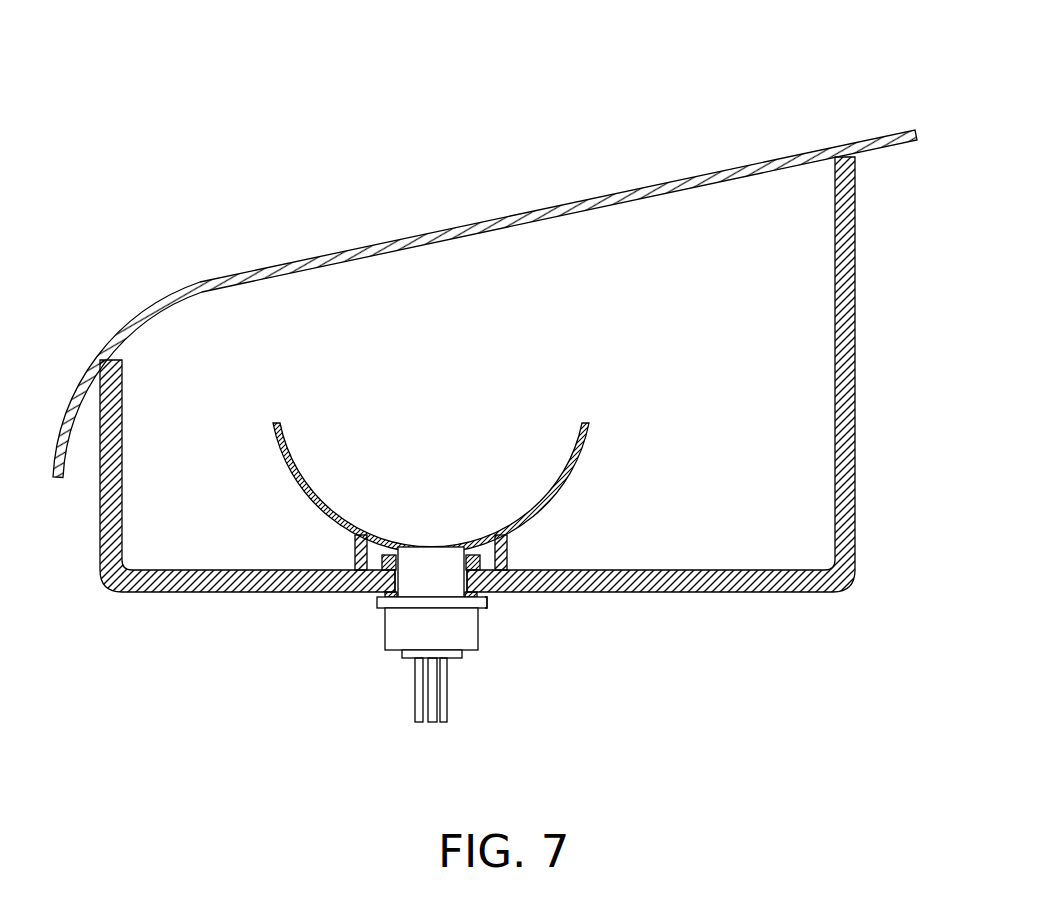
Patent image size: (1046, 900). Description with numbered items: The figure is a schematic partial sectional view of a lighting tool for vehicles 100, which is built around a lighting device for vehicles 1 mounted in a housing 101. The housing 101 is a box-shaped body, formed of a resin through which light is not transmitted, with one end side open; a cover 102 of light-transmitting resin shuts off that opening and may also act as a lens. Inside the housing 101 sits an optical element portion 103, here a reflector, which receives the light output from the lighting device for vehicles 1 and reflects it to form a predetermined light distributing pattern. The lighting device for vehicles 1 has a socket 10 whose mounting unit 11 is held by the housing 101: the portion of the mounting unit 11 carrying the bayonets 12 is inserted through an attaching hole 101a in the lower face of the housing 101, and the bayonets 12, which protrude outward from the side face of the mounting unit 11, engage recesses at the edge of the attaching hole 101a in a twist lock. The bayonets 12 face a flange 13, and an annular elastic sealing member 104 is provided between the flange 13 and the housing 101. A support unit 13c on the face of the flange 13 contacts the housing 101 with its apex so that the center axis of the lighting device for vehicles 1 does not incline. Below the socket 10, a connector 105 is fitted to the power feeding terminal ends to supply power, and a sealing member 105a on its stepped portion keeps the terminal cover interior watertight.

The lighting device for vehicles 1 is at (466, 606).
The socket 10 is at (490, 626).
The mounting unit 11 is at (432, 547).
The bayonet 12 is at (395, 565).
The flange 13 is at (460, 653).
The support unit 13c is at (487, 598).
The lighting tool for vehicles 100 is at (505, 408).
The housing 101 is at (529, 473).
The attaching hole 101a is at (460, 581).
The cover 102 is at (322, 257).
The optical element portion 103 is at (302, 487).
The sealing member 104 is at (380, 593).
The connector 105 is at (538, 699).
The sealing member 105a is at (462, 663).